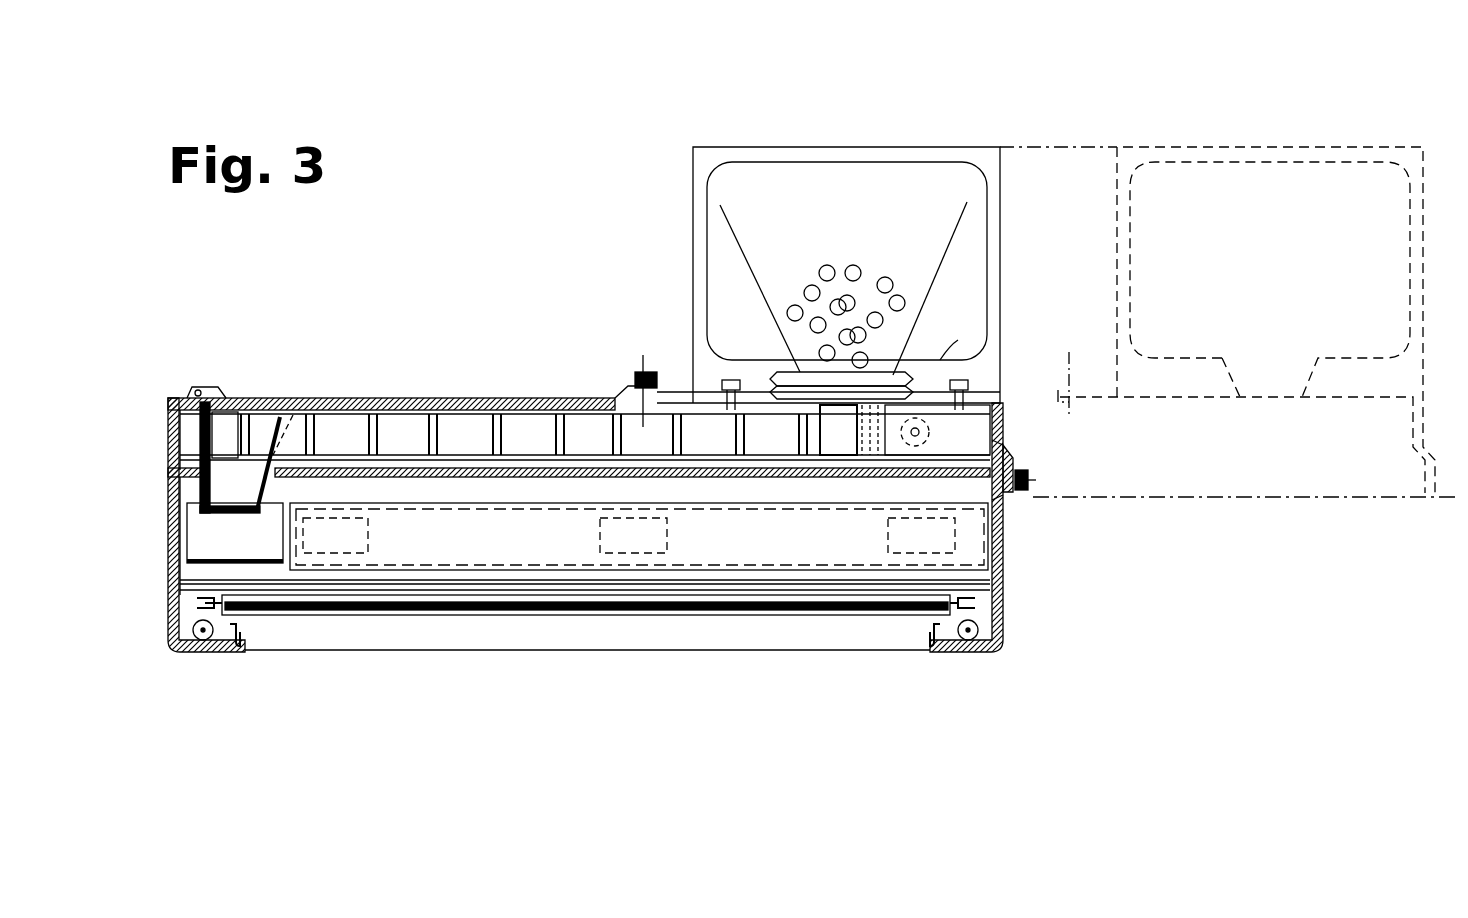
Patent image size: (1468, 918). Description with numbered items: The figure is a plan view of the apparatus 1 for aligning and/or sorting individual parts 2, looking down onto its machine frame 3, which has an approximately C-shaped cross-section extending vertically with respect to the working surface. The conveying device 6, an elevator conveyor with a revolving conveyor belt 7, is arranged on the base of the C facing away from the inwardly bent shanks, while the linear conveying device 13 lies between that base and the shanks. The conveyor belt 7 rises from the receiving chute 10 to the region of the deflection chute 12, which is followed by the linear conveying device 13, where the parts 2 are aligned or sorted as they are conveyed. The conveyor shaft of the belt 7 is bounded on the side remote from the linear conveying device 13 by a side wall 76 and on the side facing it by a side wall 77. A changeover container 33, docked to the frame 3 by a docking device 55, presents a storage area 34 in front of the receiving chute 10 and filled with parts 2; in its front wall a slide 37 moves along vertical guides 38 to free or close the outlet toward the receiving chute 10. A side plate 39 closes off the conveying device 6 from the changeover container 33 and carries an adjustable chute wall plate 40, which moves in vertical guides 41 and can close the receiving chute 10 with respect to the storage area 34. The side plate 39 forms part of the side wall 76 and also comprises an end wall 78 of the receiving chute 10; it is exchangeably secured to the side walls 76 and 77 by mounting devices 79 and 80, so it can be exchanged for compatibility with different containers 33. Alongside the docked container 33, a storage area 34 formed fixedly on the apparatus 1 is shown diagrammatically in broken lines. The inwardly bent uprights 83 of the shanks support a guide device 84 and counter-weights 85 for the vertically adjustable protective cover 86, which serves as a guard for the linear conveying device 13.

The apparatus 1 is at (685, 665).
The individual parts 2 is at (822, 265).
The machine frame 3 is at (1000, 560).
The conveying device 6 is at (385, 435).
The conveyor belt 7 is at (478, 430).
The receiving chute 10 is at (957, 430).
The deflection chute 12 is at (244, 492).
The linear conveying device 13 is at (575, 540).
The changeover container 33 is at (660, 165).
The storage area 34 is at (935, 192).
The slide 37 is at (861, 378).
The vertical guides 38 is at (785, 375).
The side plate 39 is at (958, 372).
The chute wall plate 40 is at (888, 372).
The vertical guides 41 is at (795, 385).
The docking device 55 is at (735, 380).
The side wall 76 is at (515, 398).
The side wall 77 is at (997, 512).
The end wall 78 is at (1003, 410).
The mounting device 79 is at (1028, 490).
The mounting device 80 is at (638, 372).
The uprights 83 is at (238, 650).
The guide device 84 is at (172, 625).
The counter-weights 85 is at (203, 645).
The protective cover 86 is at (610, 615).